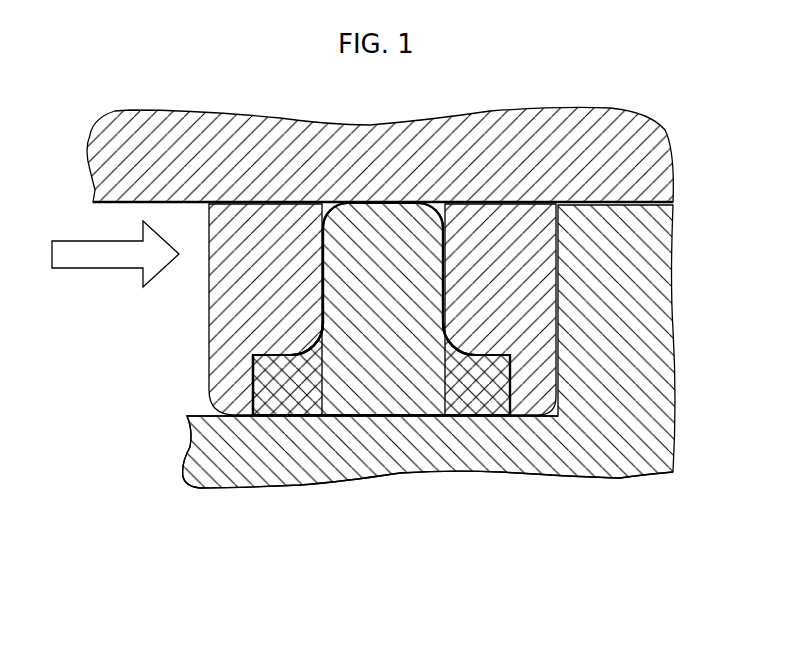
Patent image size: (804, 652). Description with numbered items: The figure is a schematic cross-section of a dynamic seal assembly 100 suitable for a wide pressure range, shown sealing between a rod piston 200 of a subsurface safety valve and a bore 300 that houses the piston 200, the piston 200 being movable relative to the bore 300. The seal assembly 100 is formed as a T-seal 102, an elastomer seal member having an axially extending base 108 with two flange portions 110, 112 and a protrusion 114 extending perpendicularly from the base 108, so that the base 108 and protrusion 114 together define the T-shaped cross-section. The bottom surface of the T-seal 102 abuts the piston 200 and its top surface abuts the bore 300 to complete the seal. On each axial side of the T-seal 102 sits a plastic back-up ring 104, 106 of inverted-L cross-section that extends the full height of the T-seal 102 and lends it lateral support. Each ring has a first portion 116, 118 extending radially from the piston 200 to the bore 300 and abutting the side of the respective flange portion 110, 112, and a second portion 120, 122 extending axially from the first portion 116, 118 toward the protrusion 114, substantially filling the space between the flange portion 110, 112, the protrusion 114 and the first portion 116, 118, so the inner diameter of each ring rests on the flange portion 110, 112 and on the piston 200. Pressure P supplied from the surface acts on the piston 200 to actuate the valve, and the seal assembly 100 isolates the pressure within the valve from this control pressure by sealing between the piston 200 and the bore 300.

The dynamic seal assembly 100 is at (547, 410).
The T-seal 102 is at (359, 341).
The back-up ring 104 is at (483, 294).
The back-up ring 106 is at (245, 295).
The base 108 is at (379, 390).
The flange portion 110 is at (488, 388).
The flange portion 112 is at (277, 388).
The protrusion 114 is at (383, 227).
The first portion 116 is at (535, 386).
The first portion 118 is at (233, 387).
The second portion 120 is at (478, 330).
The second portion 122 is at (292, 333).
The rod piston 200 is at (633, 480).
The bore 300 is at (623, 110).
The pressure P is at (103, 254).